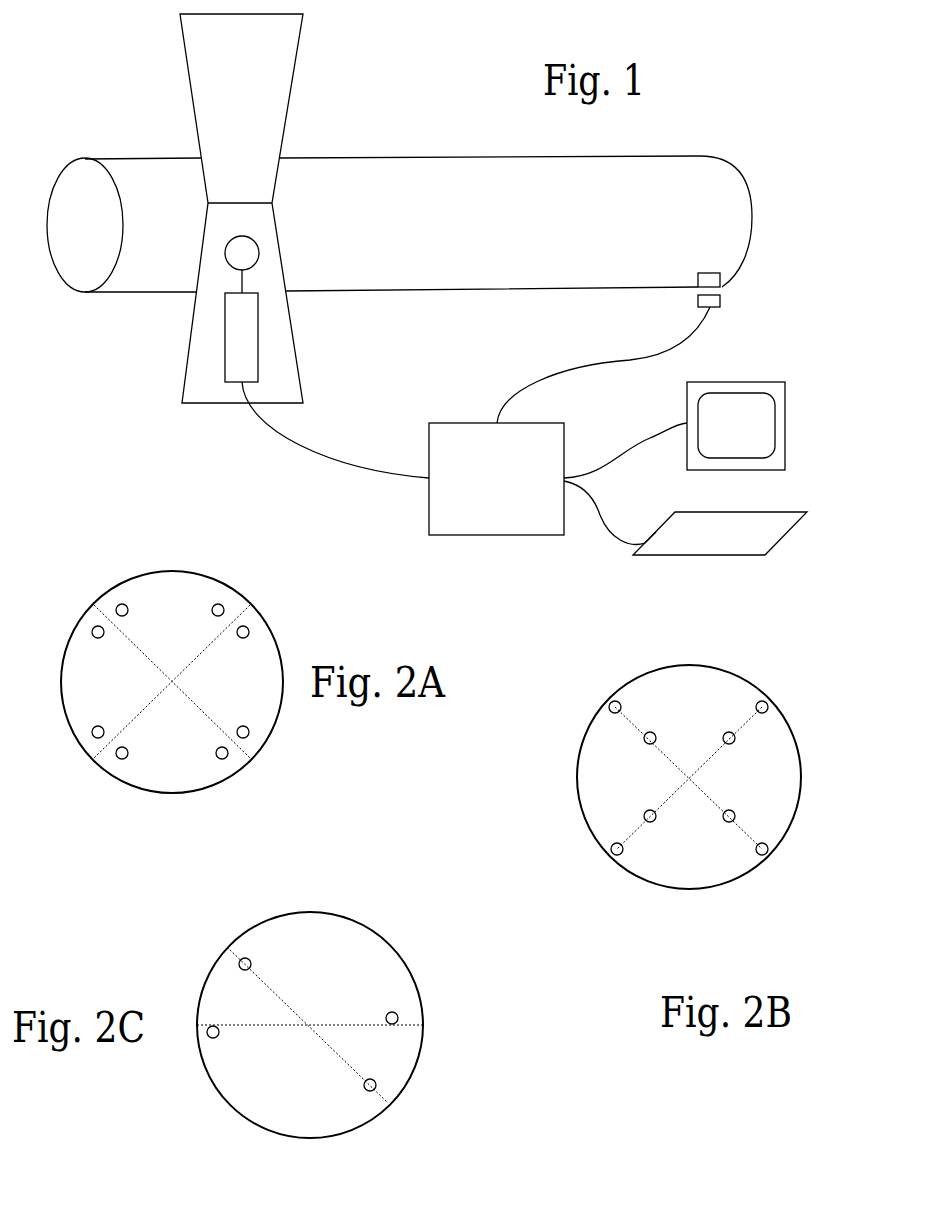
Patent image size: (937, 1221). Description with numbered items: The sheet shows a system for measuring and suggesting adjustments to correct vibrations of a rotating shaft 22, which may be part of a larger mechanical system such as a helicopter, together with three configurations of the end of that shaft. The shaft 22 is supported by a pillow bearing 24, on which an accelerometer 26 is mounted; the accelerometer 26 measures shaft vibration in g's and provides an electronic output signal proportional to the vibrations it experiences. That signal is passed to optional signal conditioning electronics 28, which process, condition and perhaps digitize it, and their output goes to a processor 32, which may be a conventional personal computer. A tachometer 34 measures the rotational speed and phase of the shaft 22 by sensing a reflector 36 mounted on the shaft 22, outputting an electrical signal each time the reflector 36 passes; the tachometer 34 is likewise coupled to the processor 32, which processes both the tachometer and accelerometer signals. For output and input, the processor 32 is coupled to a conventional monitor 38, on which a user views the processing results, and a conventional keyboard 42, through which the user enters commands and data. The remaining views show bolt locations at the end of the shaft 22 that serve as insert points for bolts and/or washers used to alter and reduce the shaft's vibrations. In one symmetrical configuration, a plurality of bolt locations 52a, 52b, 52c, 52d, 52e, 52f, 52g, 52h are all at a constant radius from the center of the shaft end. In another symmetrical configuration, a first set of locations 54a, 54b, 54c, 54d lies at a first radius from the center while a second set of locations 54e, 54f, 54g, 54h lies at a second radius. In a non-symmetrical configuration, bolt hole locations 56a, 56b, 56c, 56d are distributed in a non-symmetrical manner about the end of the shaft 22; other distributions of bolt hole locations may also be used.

In FIG. 1, the shaft 22 is at (471, 239).
In FIG. 1, the pillow bearing 24 is at (230, 118).
In FIG. 1, the accelerometer 26 is at (225, 253).
In FIG. 1, the signal conditioning electronics 28 is at (225, 338).
In FIG. 1, the processor 32 is at (484, 491).
In FIG. 1, the tachometer 34 is at (720, 301).
In FIG. 1, the reflector 36 is at (710, 273).
In FIG. 1, the monitor 38 is at (725, 438).
In FIG. 1, the keyboard 42 is at (708, 546).
In FIG. 2A, the bolt location 52a is at (122, 604).
In FIG. 2A, the bolt location 52b is at (220, 604).
In FIG. 2A, the bolt location 52c is at (249, 632).
In FIG. 2A, the bolt location 52d is at (247, 737).
In FIG. 2A, the bolt location 52e is at (222, 759).
In FIG. 2A, the bolt location 52f is at (122, 759).
In FIG. 2A, the bolt location 52g is at (96, 737).
In FIG. 2A, the bolt location 52h is at (92, 632).
In FIG. 2B, the first-set bolt location 54a is at (616, 701).
In FIG. 2B, the first-set bolt location 54b is at (650, 732).
In FIG. 2B, the first-set bolt location 54c is at (729, 732).
In FIG. 2B, the first-set bolt location 54d is at (762, 701).
In FIG. 2B, the second-set bolt location 54e is at (762, 855).
In FIG. 2B, the second-set bolt location 54f is at (729, 822).
In FIG. 2B, the second-set bolt location 54g is at (611, 849).
In FIG. 2B, the second-set bolt location 54h is at (644, 816).
In FIG. 2C, the bolt hole location 56a is at (245, 958).
In FIG. 2C, the bolt hole location 56b is at (392, 1024).
In FIG. 2C, the bolt hole location 56c is at (370, 1091).
In FIG. 2C, the bolt hole location 56d is at (213, 1038).